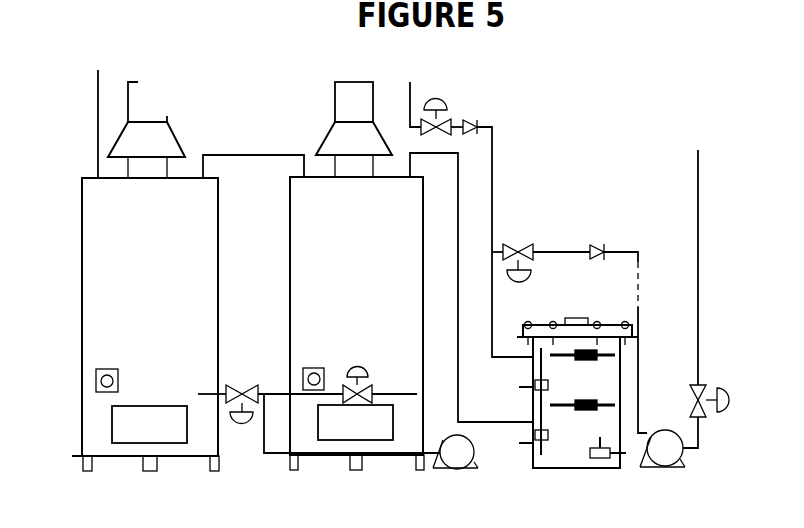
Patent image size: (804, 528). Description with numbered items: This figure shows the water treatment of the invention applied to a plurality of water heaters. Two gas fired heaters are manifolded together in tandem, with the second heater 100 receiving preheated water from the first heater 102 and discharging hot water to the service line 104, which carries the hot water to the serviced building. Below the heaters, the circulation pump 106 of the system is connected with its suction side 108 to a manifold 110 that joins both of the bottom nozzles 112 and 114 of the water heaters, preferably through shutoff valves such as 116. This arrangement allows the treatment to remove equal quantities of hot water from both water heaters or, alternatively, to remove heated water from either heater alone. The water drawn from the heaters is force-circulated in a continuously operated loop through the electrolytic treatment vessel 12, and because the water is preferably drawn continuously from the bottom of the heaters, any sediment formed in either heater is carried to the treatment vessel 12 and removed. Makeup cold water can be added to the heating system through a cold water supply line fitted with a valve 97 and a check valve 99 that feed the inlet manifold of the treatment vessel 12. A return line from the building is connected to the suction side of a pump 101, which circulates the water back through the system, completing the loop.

The electrolytic treatment vessel 12 is at (587, 353).
The valve 97 is at (517, 243).
The check valve 99 is at (600, 243).
The second heater 100 is at (128, 210).
The pump 101 is at (658, 435).
The first heater 102 is at (313, 199).
The service line 104 is at (98, 90).
The circulation pump 106 is at (453, 446).
The suction side 108 is at (283, 450).
The manifold 110 is at (228, 392).
The bottom nozzle 112 is at (208, 393).
The bottom nozzle 114 is at (395, 392).
The shutoff valve 116 is at (348, 368).